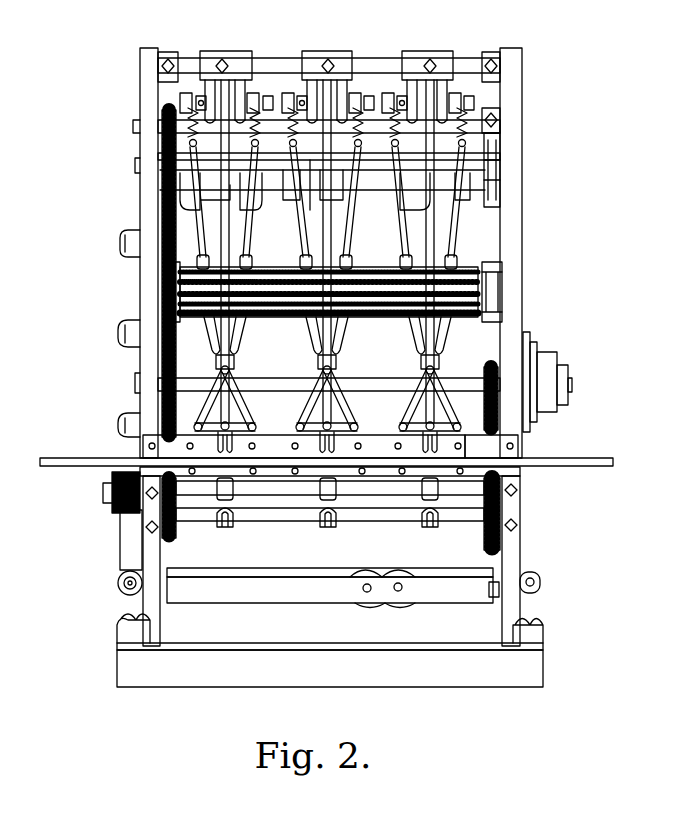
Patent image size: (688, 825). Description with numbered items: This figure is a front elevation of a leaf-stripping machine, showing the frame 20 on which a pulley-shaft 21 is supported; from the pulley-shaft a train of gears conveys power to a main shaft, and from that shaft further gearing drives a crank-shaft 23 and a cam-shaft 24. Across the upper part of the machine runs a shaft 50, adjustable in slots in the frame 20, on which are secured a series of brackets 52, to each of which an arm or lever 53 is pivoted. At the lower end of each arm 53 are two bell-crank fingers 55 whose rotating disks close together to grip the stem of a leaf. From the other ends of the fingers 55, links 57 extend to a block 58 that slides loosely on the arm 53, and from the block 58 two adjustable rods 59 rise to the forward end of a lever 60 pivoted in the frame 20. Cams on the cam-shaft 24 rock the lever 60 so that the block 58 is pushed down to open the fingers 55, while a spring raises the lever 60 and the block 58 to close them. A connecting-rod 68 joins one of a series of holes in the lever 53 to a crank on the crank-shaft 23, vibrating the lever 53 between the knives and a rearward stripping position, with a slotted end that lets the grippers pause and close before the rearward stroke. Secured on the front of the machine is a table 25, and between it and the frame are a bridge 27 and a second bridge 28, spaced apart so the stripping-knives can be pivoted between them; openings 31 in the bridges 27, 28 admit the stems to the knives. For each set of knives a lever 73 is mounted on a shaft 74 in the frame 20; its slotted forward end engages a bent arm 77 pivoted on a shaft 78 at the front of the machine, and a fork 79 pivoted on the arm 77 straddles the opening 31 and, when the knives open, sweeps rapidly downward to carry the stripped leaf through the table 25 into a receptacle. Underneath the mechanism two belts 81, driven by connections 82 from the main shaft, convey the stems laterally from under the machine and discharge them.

The frame 20 is at (140, 211).
The pulley-shaft 21 is at (372, 380).
The crank-shaft 23 is at (373, 190).
The cam-shaft 24 is at (133, 125).
The table 25 is at (80, 458).
The bridge 27 is at (520, 445).
The second bridge 28 is at (290, 436).
The openings 31 is at (415, 443).
The shaft 50 is at (288, 60).
The brackets 52 is at (228, 52).
The arm or lever 53 is at (340, 244).
The bell-crank fingers 55 is at (445, 410).
The links 57 is at (296, 400).
The block 58 is at (332, 350).
The adjustable rods 59 is at (300, 223).
The lever 60 is at (254, 104).
The connecting-rod 68 is at (360, 150).
The lever 73 is at (336, 527).
The shaft 74 is at (297, 522).
The bent arm 77 is at (438, 525).
The shaft 78 is at (270, 497).
The fork 79 is at (340, 445).
The belts 81 is at (360, 606).
The connections 82 is at (118, 568).